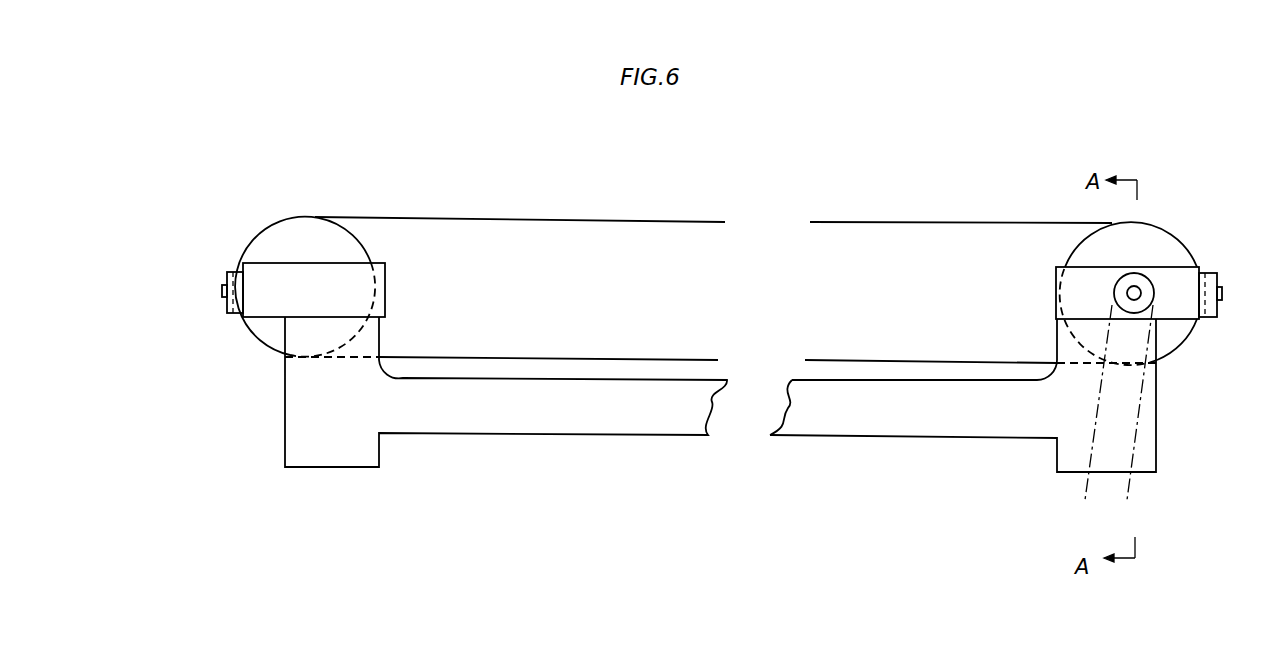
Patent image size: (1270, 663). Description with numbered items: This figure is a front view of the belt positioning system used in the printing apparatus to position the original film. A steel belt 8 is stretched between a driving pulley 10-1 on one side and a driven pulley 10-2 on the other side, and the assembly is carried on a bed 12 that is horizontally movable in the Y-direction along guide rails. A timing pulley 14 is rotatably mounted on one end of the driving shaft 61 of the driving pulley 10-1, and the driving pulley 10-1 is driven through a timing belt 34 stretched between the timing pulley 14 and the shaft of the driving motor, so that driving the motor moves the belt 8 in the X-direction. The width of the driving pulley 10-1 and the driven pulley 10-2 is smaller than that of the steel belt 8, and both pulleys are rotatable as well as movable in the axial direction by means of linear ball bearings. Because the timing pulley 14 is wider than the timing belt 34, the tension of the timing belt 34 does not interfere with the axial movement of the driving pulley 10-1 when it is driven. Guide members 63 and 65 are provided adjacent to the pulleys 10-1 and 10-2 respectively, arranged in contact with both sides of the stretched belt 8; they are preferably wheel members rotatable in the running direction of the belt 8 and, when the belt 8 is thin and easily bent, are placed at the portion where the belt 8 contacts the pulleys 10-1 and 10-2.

The steel belt 8 is at (890, 222).
The bed 12 is at (295, 404).
The driving pulley 10-1 is at (1166, 240).
The driven pulley 10-2 is at (310, 230).
The timing pulley 14 is at (1140, 275).
The timing belt 34 is at (1098, 400).
The driving shaft 61 is at (1210, 300).
The guide member 63 is at (1203, 319).
The guide member 65 is at (233, 273).